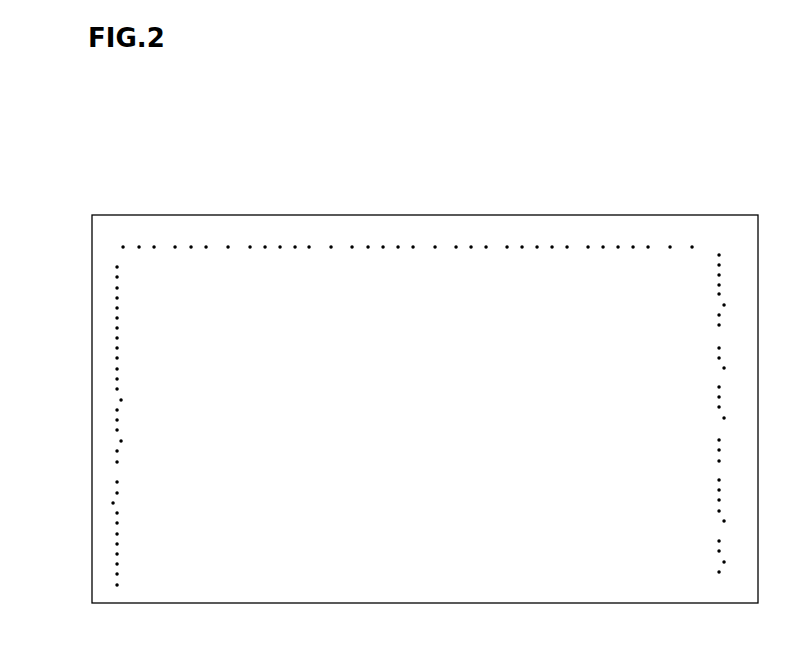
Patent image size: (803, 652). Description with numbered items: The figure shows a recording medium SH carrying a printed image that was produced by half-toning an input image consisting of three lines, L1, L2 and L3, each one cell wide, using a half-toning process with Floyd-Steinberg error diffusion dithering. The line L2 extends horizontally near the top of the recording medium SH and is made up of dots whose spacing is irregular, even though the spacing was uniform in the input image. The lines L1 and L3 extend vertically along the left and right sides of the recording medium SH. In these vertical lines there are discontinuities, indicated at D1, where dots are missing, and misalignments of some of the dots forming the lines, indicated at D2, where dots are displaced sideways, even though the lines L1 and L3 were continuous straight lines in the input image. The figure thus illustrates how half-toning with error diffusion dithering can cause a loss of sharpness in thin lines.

The recording medium SH is at (399, 215).
The line L1 is at (114, 383).
The line L2 is at (488, 240).
The line L3 is at (702, 444).
The discontinuity D1 is at (121, 357).
The misalignment D2 is at (127, 442).